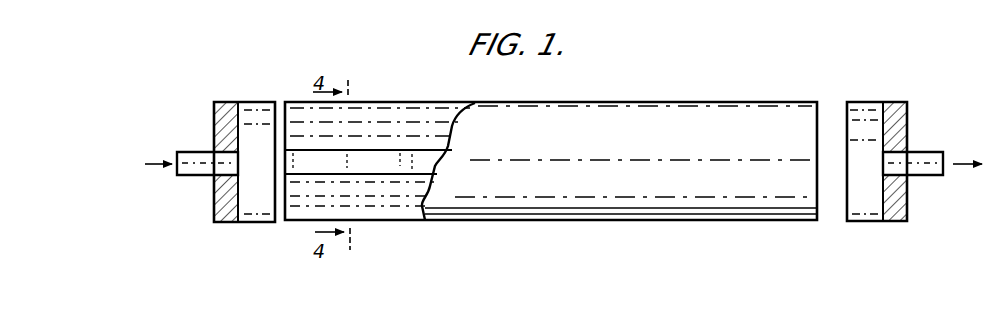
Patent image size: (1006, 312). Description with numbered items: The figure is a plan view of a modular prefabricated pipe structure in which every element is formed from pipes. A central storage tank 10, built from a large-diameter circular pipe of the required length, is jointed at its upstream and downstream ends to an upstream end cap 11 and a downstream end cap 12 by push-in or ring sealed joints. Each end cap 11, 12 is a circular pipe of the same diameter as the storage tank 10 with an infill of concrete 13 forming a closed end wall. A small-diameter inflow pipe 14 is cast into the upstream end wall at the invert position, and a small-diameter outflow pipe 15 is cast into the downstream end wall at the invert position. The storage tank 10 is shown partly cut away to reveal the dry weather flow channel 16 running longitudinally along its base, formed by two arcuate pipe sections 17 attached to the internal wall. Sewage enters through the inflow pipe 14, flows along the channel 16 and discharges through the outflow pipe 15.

The storage tank 10 is at (447, 102).
The upstream end cap 11 is at (250, 100).
The downstream end cap 12 is at (860, 100).
The infill of concrete 13 is at (214, 118).
The inflow pipe 14 is at (190, 172).
The outflow pipe 15 is at (925, 168).
The dry weather flow channel 16 is at (393, 160).
The arcuate pipe sections 17 is at (370, 118).